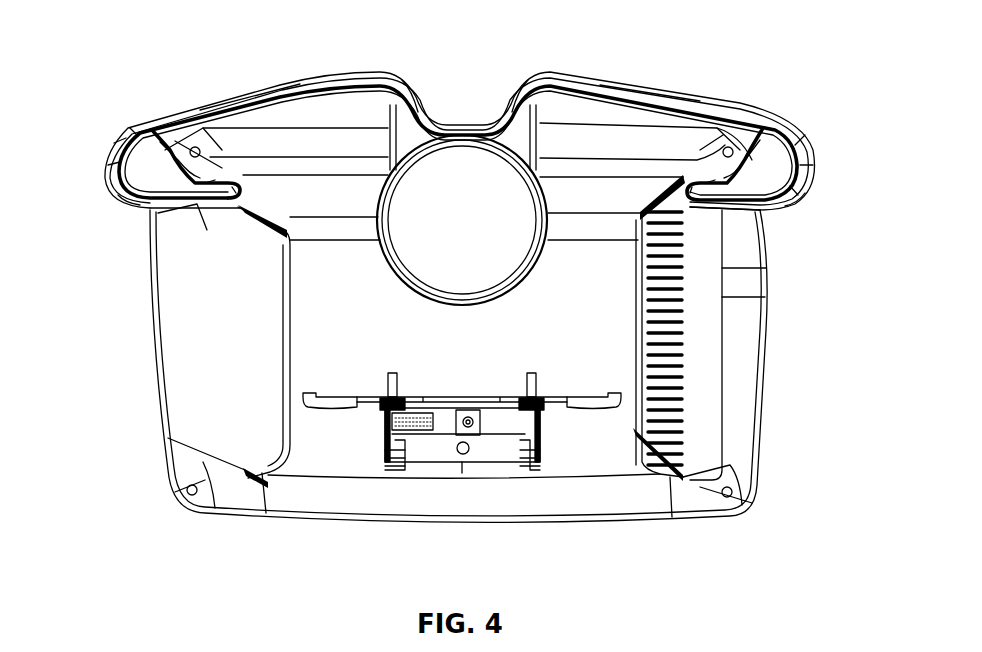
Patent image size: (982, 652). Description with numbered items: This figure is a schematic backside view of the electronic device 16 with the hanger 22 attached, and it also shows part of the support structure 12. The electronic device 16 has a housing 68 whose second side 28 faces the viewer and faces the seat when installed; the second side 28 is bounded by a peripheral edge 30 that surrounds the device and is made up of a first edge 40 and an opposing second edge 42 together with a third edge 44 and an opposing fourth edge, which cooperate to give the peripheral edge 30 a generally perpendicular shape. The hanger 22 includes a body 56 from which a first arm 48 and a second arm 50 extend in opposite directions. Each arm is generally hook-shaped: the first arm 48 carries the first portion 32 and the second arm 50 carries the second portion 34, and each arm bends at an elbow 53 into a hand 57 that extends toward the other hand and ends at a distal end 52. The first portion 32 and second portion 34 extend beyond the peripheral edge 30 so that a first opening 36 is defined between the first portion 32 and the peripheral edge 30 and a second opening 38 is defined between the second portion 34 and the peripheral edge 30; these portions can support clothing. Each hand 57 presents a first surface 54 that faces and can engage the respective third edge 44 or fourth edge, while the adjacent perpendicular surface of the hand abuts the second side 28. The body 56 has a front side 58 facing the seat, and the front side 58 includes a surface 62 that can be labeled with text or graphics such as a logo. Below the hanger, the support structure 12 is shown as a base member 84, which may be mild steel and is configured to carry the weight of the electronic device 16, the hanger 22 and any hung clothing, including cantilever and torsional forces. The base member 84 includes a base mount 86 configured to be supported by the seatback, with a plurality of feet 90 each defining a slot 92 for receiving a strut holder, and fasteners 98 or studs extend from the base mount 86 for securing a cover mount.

The support structure 12 is at (466, 393).
The electronic device 16 is at (797, 332).
The hanger 22 is at (549, 135).
The second side 28 is at (743, 413).
The peripheral edge 30 is at (270, 122).
The first portion 32 is at (332, 79).
The second portion 34 is at (663, 90).
The first opening 36 is at (112, 190).
The second opening 38 is at (810, 190).
The first edge 40 is at (460, 119).
The second edge 42 is at (467, 530).
The third edge 44 is at (478, 331).
The first arm 48 is at (408, 103).
The second arm 50 is at (517, 103).
The distal end 52 is at (222, 196).
The elbow 53 is at (145, 165).
The first surface 54 is at (168, 218).
The body 56 is at (541, 262).
The hand 57 is at (190, 188).
The front side 58 is at (395, 265).
The surface 62 is at (410, 238).
The housing 68 is at (183, 397).
The base member 84 is at (372, 407).
The base mount 86 is at (547, 407).
The feet 90 is at (300, 403).
The slot 92 is at (320, 400).
The fasteners 98 is at (398, 374).